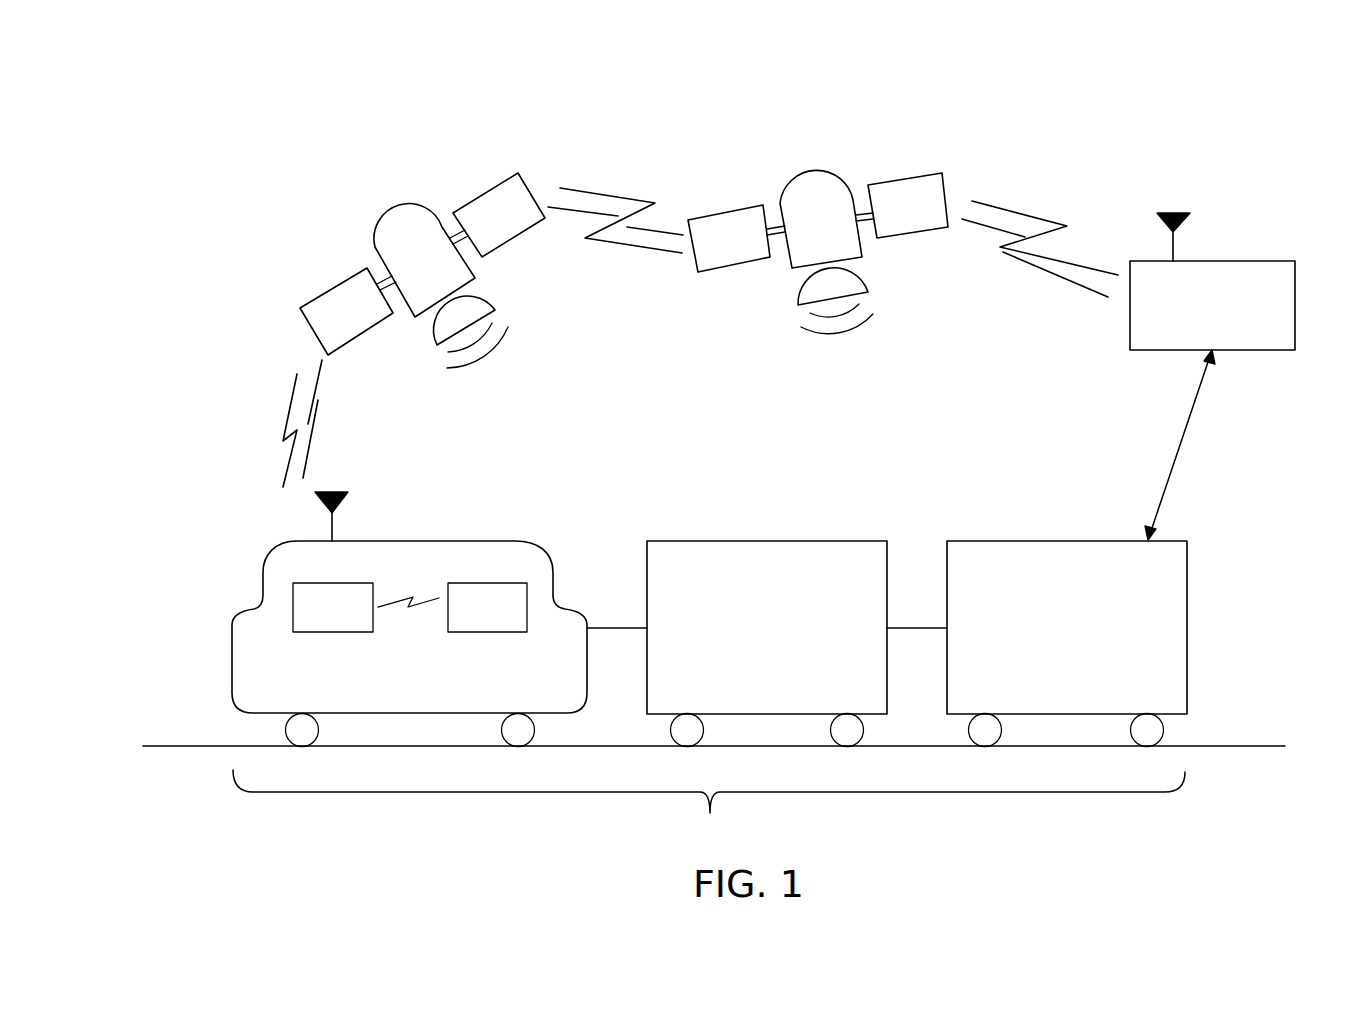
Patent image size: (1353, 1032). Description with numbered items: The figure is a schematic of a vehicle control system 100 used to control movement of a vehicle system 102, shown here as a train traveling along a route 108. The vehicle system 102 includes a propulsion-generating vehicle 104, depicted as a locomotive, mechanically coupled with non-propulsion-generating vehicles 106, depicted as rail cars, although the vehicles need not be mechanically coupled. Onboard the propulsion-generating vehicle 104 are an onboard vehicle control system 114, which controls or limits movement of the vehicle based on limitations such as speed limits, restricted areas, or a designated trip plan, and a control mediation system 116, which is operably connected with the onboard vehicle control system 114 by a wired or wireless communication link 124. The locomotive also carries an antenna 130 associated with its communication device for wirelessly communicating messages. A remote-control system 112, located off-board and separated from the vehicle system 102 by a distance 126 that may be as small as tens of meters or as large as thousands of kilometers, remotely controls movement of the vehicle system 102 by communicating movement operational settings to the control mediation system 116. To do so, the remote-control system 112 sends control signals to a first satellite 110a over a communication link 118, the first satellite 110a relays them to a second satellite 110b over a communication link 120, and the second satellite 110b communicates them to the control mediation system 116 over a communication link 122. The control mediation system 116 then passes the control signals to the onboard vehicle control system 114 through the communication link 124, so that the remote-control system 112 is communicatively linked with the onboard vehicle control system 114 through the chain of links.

The vehicle control system 100 is at (1123, 102).
The vehicle system 102 is at (709, 807).
The propulsion-generating vehicle 104 is at (410, 541).
The non-propulsion-generating vehicles 106 is at (767, 541).
The route 108 is at (180, 745).
The first satellite 110a is at (795, 290).
The second satellite 110b is at (428, 333).
The remote-control system 112 is at (1235, 261).
The onboard vehicle control system (OVCS) 114 is at (487, 632).
The control mediation system 116 is at (333, 632).
The communication link 118 is at (1018, 210).
The communication link 120 is at (603, 190).
The communication link 122 is at (283, 420).
The communication link 124 is at (393, 602).
The distance 126 is at (1180, 445).
The antenna 130 is at (318, 495).